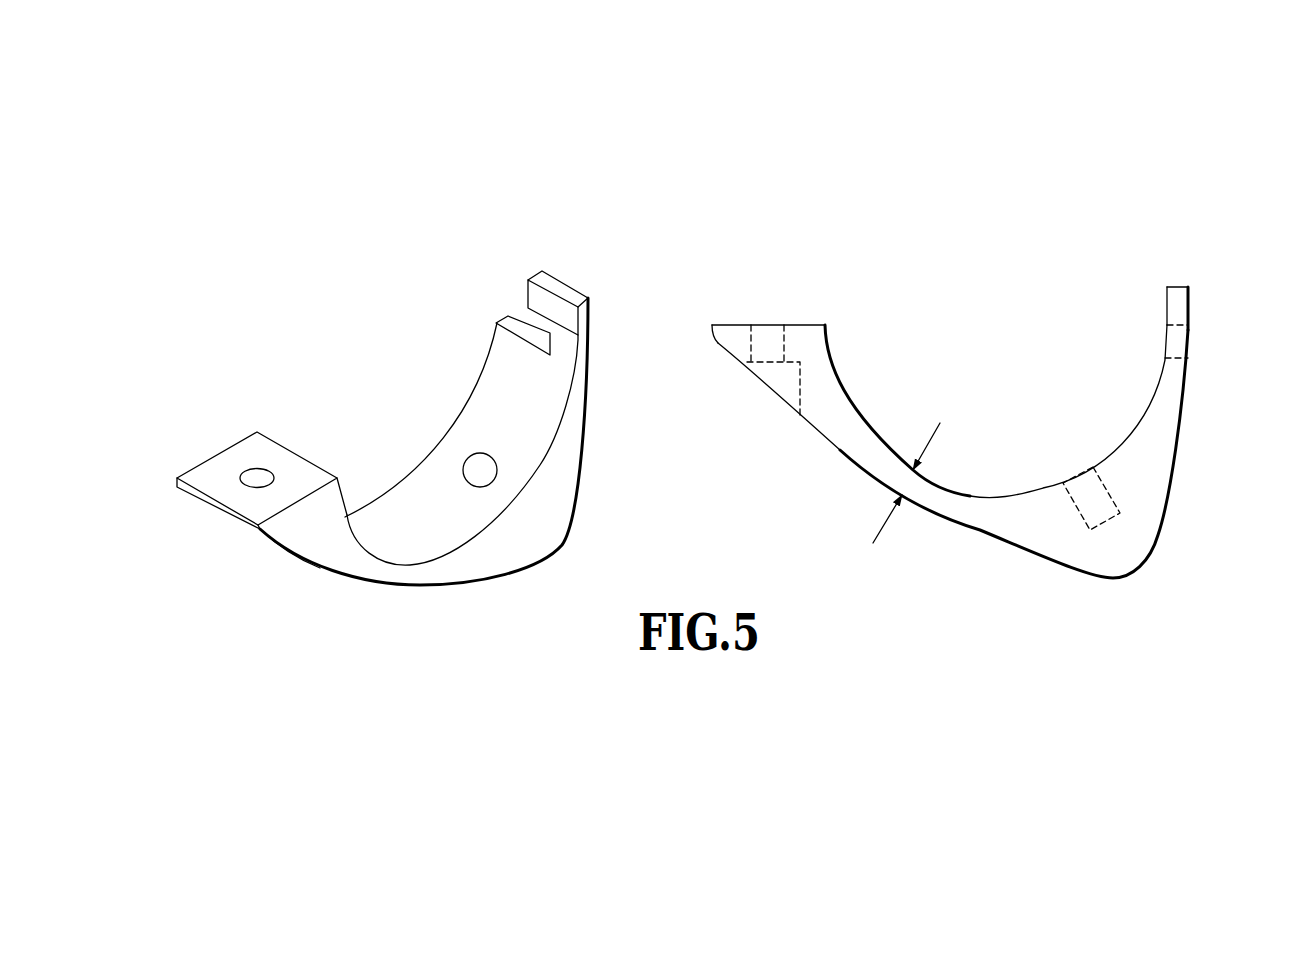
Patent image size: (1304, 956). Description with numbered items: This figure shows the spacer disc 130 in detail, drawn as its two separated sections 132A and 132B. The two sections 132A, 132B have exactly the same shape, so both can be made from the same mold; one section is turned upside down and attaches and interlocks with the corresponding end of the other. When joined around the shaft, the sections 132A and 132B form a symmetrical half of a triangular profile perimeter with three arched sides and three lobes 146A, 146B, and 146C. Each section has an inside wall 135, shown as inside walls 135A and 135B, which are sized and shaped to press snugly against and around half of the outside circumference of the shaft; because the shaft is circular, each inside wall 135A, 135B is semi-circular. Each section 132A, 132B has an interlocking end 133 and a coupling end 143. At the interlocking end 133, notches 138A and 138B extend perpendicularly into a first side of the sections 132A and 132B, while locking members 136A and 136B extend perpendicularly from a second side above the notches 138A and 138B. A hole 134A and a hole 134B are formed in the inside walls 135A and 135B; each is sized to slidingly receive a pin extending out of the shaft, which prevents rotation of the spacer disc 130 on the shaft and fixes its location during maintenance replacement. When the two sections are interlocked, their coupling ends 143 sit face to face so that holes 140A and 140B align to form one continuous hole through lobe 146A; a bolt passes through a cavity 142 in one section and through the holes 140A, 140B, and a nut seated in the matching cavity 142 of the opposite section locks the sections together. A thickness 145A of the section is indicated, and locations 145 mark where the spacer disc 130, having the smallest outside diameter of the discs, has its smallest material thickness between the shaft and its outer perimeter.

The spacer disc 130 is at (938, 140).
The first section of the spacer disc 132A is at (320, 328).
The second section of the spacer disc 132B is at (1028, 267).
The interlocking end 133 is at (518, 243).
The hole in inside wall of first section 134A is at (476, 468).
The hole in inside wall of second section 134B is at (1087, 483).
The inside wall 135 is at (548, 378).
The inside wall of first section 135A is at (415, 523).
The inside wall of second section 135B is at (840, 385).
The locking member of first section 136A is at (562, 287).
The locking member of second section 136B is at (1188, 298).
The notch of first section 138A is at (507, 317).
The notch of second section 138B is at (1178, 342).
The hole in coupling end of first section 140A is at (255, 478).
The hole in coupling end of second section 140B is at (768, 337).
The cavity 142 is at (777, 385).
The coupling end 143 is at (212, 528).
The minimum material thickness location 145 is at (890, 515).
The side surface 145A is at (290, 538).
The first lobe 146A is at (175, 484).
The second lobe 146B is at (545, 538).
The third lobe 146C is at (1127, 562).